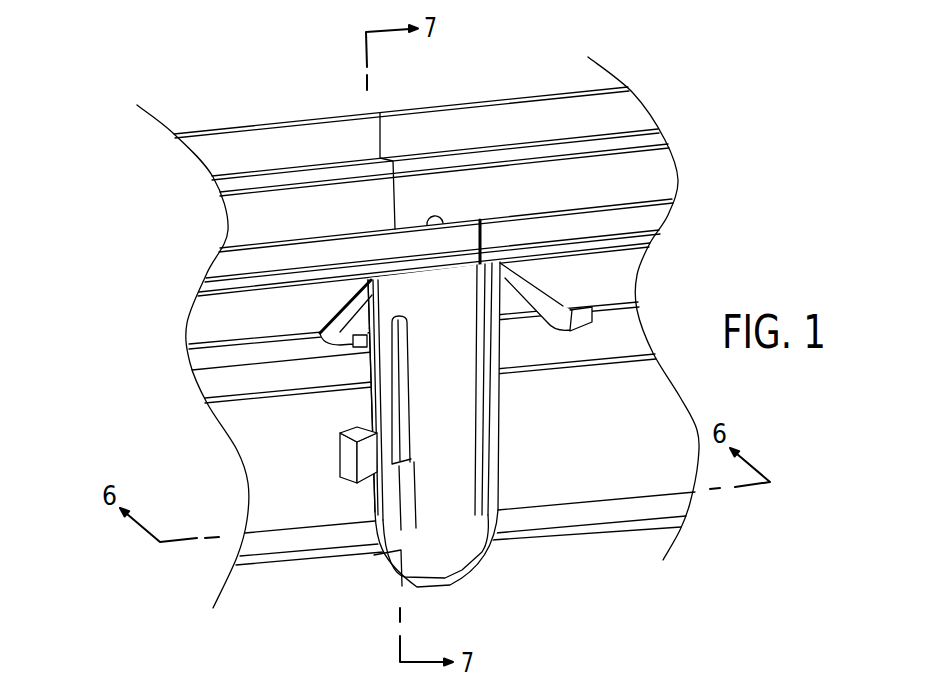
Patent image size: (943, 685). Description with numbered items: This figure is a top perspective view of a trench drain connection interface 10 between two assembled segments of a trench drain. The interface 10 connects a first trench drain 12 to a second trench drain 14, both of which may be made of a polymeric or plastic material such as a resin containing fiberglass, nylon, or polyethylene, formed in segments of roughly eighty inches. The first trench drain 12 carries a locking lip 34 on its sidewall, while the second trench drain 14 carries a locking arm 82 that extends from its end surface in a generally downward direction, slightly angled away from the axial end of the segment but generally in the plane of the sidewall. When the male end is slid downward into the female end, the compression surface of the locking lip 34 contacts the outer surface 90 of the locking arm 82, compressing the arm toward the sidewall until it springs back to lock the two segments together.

The trench drain connection interface 10 is at (257, 81).
The first trench drain 12 is at (259, 577).
The second trench drain 14 is at (583, 545).
The locking lip 34 is at (360, 446).
The locking arm 82 is at (355, 414).
The outer surface 90 is at (355, 405).